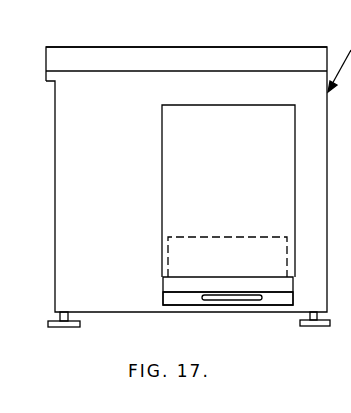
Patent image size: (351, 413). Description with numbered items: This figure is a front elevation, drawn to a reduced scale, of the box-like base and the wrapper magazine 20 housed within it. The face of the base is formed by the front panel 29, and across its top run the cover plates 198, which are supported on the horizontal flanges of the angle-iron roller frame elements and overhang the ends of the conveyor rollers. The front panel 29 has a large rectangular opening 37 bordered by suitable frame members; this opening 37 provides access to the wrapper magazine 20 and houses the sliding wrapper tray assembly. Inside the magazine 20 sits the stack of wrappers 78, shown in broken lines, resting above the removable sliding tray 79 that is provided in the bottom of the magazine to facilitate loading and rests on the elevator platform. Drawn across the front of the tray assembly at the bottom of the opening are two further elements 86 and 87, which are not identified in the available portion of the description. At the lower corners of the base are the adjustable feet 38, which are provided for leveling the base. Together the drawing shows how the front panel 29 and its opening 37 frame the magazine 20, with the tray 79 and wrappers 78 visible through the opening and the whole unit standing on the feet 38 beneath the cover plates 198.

The cover plate 198 is at (222, 55).
The front panel 29 is at (115, 185).
The rectangular opening 37 is at (228, 191).
The wrapper magazine 20 is at (208, 209).
The stack of wrappers 78 is at (215, 232).
The removable sliding tray 79 is at (217, 277).
The drawer front 86 is at (185, 300).
The handle slot 87 is at (237, 300).
The adjustable feet 38 is at (85, 322).